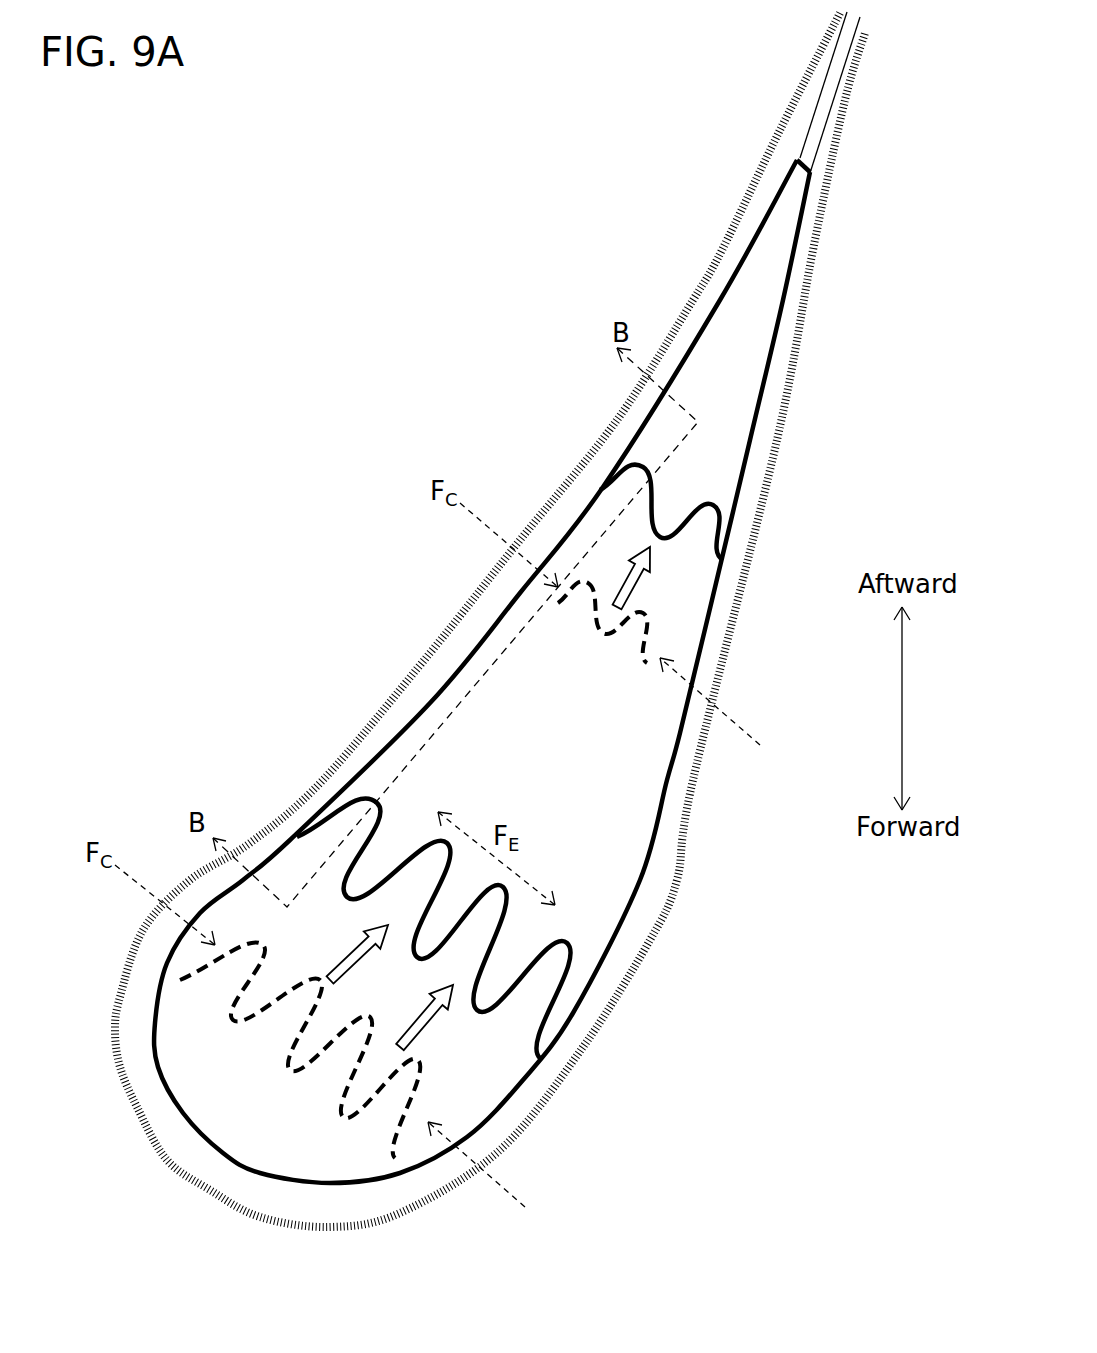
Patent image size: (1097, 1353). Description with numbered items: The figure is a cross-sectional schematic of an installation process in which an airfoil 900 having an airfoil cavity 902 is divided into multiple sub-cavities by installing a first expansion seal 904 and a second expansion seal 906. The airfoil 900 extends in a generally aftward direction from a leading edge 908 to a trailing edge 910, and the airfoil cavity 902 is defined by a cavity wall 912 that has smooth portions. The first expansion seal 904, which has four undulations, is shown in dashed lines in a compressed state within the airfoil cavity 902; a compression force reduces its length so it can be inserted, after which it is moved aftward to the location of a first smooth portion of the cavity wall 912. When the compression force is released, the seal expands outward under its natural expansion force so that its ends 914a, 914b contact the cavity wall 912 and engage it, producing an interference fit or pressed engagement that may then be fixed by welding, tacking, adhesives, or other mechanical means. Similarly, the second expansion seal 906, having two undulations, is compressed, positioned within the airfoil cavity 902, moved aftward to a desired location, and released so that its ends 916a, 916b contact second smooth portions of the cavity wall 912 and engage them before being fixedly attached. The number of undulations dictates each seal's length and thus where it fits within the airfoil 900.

The airfoil 900 is at (211, 419).
The airfoil cavity 902 is at (533, 748).
The first expansion seal 904 is at (357, 805).
The second expansion seal 906 is at (582, 583).
The leading edge 908 is at (172, 1160).
The trailing edge 910 is at (845, 8).
The cavity wall 912 is at (647, 828).
The end of first expansion seal 914a is at (290, 835).
The end of first expansion seal 914b is at (549, 1063).
The end of second expansion seal 916a is at (599, 484).
The end of second expansion seal 916b is at (727, 570).